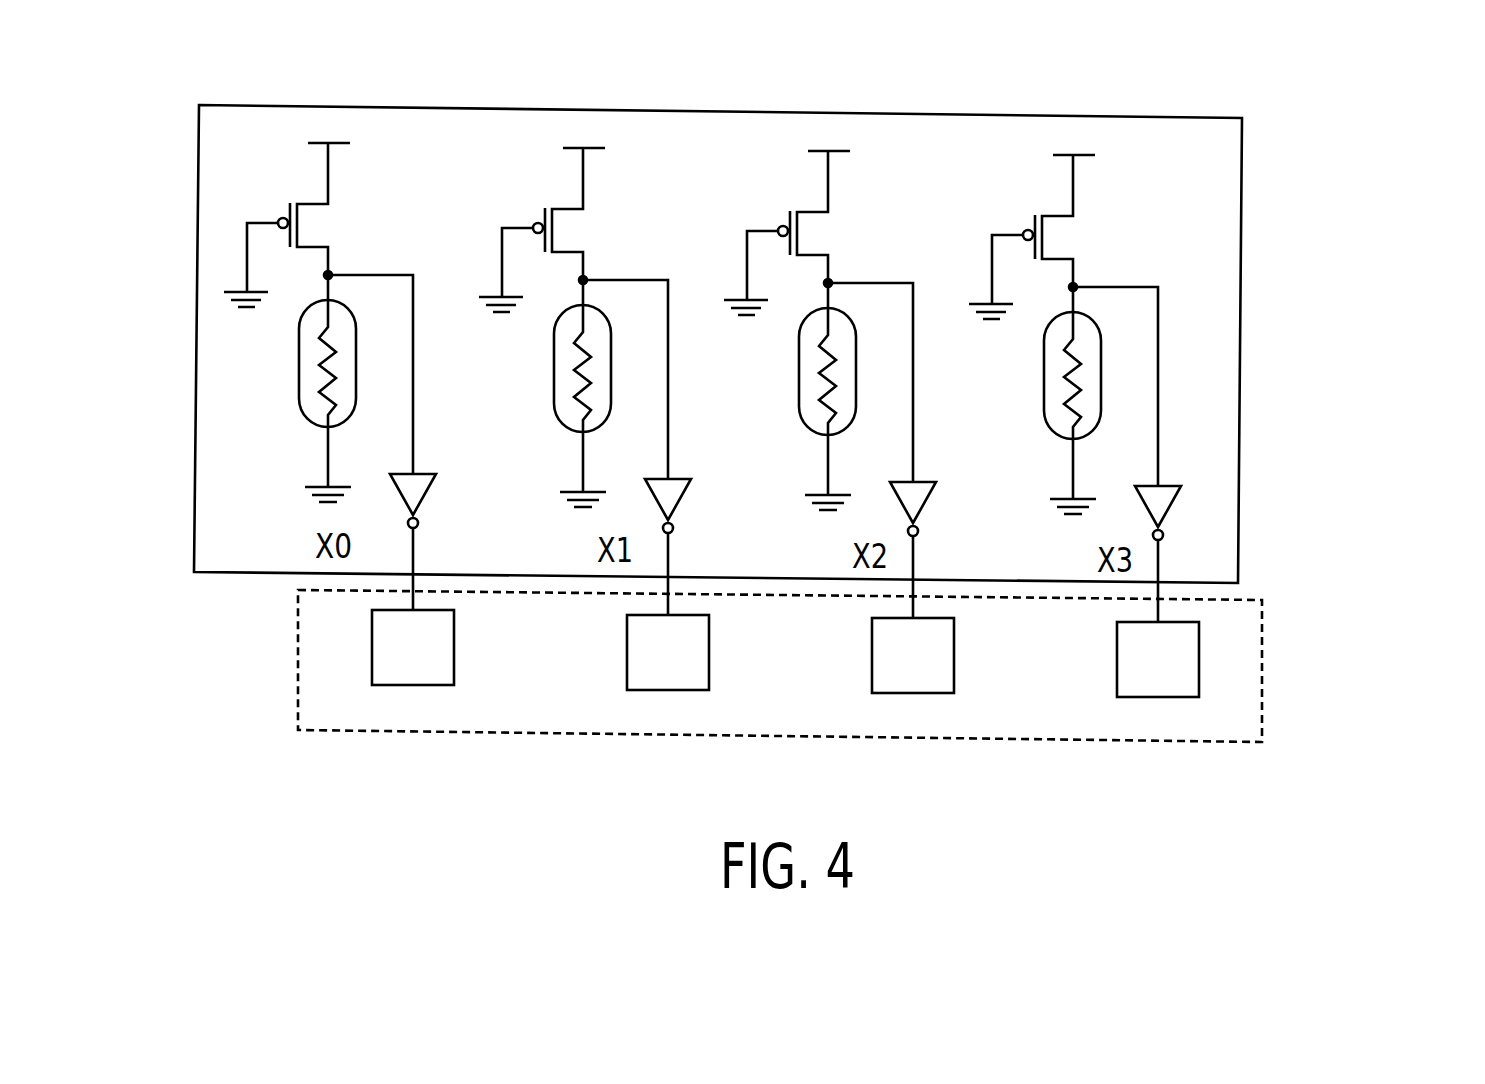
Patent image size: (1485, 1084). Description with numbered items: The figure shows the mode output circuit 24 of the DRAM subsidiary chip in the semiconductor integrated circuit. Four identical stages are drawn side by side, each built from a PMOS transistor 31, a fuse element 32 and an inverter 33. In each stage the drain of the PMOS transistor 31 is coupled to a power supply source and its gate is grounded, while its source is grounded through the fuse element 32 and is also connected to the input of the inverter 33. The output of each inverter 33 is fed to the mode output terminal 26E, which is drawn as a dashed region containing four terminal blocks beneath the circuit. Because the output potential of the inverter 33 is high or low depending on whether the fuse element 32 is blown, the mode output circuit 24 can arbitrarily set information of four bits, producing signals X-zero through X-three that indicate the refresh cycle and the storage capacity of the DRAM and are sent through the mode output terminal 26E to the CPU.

The mode output circuit 24 is at (577, 65).
The mode output terminal 26E is at (878, 641).
The PMOS transistor 31 is at (319, 225).
The fuse element 32 is at (289, 388).
The inverter 33 is at (405, 442).